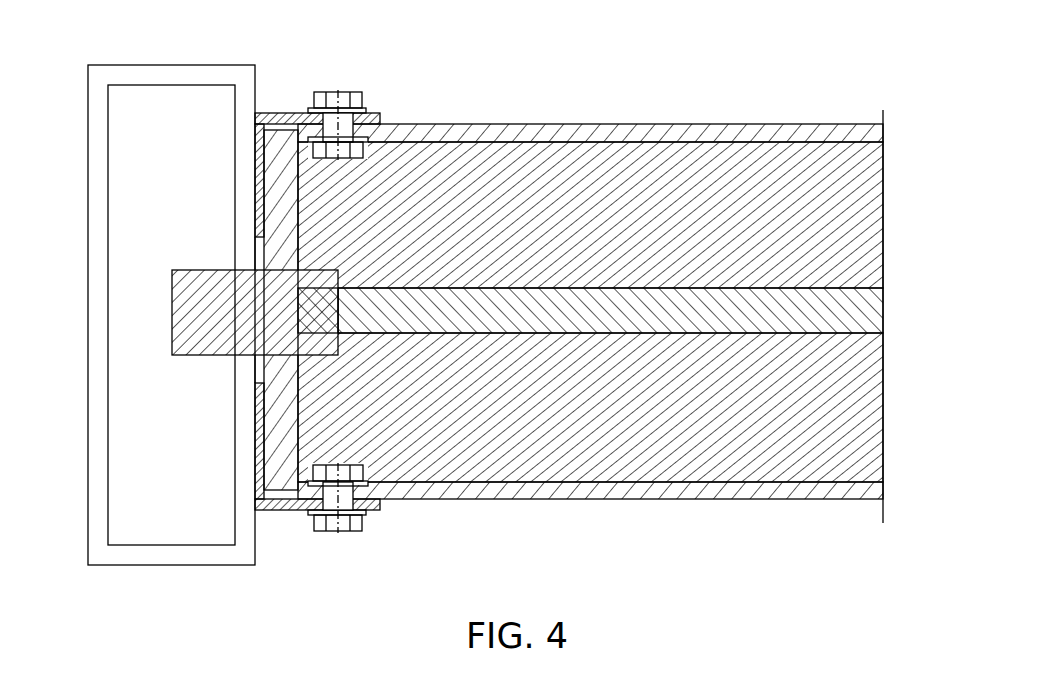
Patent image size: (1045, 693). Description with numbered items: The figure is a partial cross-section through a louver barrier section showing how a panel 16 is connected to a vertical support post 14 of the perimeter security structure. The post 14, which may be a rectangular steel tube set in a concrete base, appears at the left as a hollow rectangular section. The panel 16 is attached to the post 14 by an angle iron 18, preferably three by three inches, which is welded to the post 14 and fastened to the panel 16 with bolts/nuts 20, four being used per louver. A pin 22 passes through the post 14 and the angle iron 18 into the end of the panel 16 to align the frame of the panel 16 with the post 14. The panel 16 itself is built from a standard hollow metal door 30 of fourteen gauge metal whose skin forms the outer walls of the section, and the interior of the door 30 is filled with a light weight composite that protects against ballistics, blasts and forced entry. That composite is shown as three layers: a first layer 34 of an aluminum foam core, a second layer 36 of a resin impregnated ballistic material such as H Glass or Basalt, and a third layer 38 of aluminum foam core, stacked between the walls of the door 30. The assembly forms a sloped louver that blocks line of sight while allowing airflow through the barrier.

The vertical support post 14 is at (98, 107).
The panel 16 is at (717, 110).
The angle iron 18 is at (281, 112).
The bolts/nuts 20 is at (339, 100).
The pin 22 is at (208, 270).
The metal door 30 is at (497, 130).
The first layer 34 is at (855, 194).
The second layer 36 is at (850, 312).
The third layer 38 is at (852, 412).